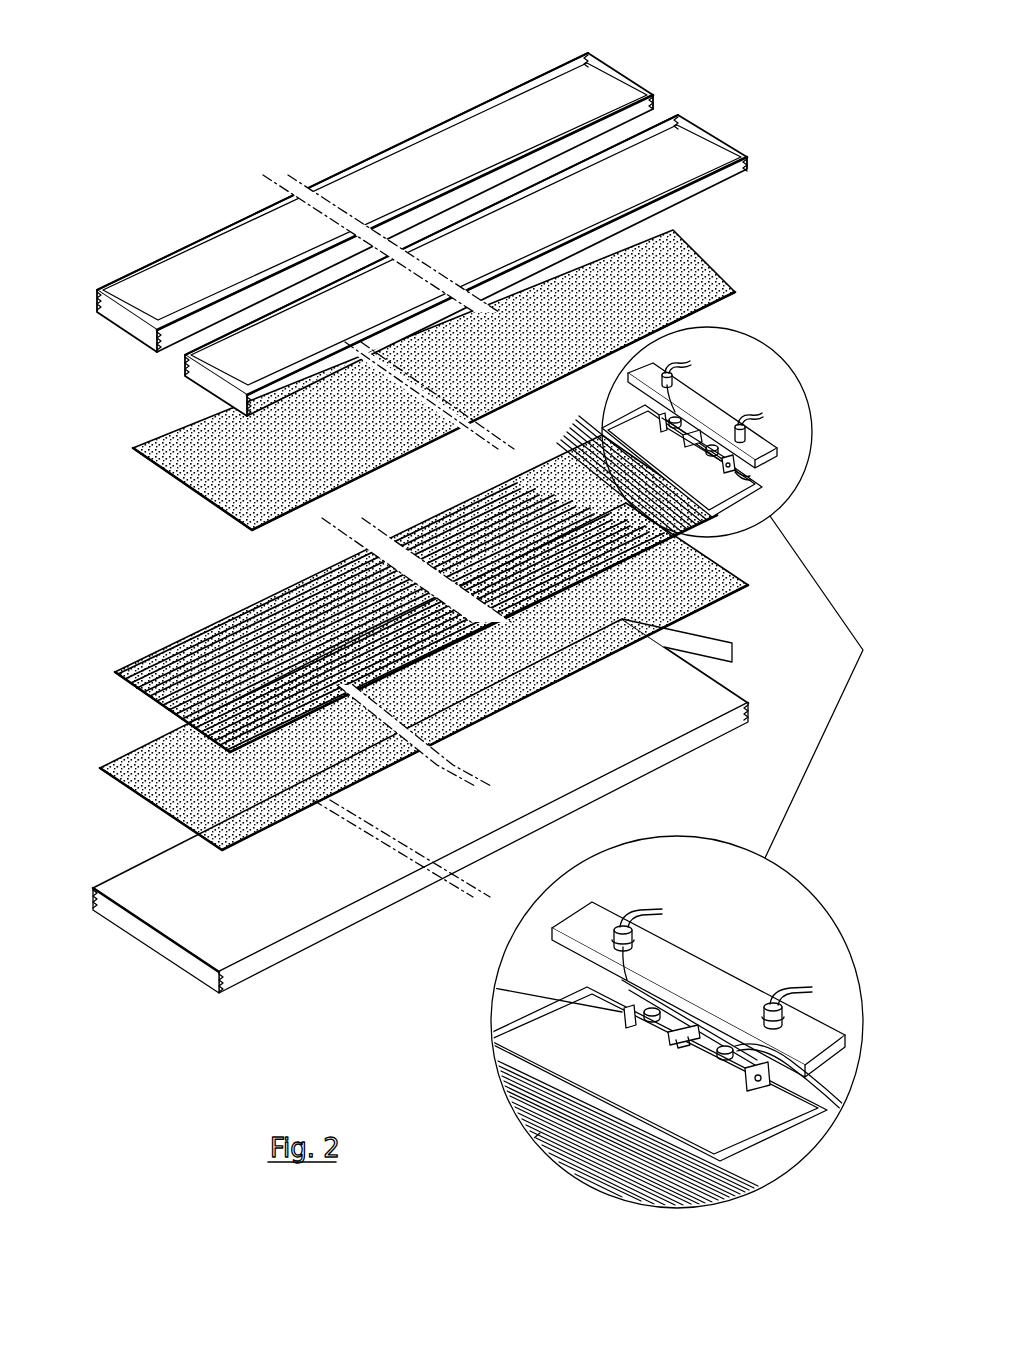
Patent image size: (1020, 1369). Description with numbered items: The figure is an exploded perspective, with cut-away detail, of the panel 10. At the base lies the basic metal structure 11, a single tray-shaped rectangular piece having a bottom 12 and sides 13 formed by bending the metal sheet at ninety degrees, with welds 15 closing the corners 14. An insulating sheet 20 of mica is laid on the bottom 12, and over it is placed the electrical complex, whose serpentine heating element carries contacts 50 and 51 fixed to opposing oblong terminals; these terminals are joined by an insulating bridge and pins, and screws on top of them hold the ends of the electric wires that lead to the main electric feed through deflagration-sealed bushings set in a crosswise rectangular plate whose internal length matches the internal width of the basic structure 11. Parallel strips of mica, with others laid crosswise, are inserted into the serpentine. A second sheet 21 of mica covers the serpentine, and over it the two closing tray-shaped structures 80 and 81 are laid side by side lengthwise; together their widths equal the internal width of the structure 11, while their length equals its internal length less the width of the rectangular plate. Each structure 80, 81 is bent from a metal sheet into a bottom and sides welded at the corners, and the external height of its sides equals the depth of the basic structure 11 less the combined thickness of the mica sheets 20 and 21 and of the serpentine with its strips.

The panel 10 is at (403, 540).
The basic metal structure 11 is at (427, 845).
The bottom 12 is at (264, 925).
The sides 13 is at (373, 903).
The corners 14 is at (95, 912).
The welds 15 is at (93, 893).
The insulating sheet 20 is at (163, 787).
The second sheet 21 is at (135, 480).
The contact 50 is at (530, 991).
The contact 51 is at (773, 1092).
The closing tray-shaped structure 80 is at (467, 246).
The closing tray-shaped structure 81 is at (359, 186).